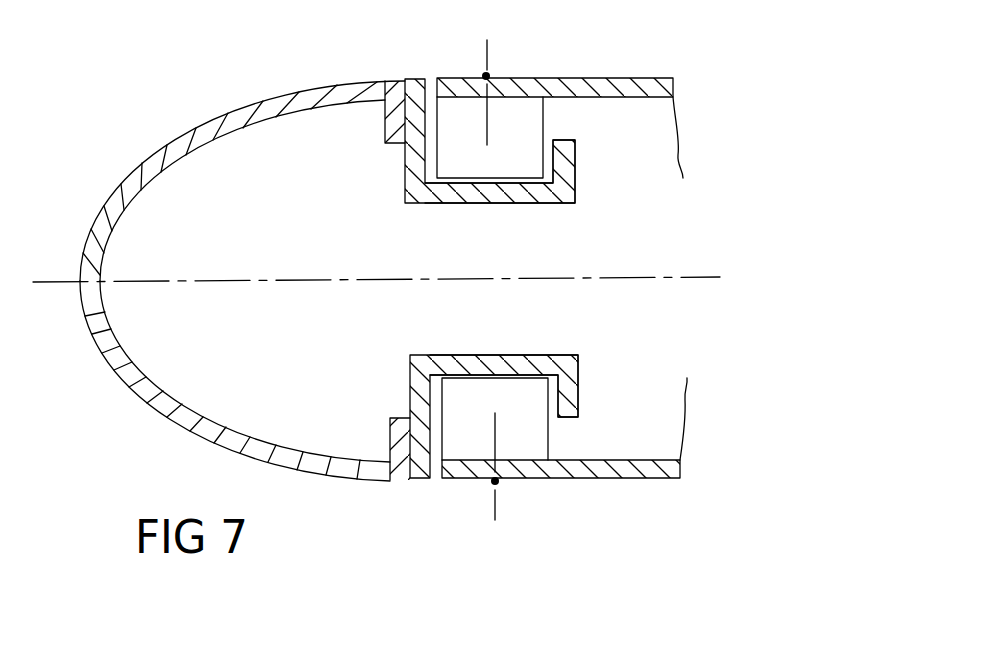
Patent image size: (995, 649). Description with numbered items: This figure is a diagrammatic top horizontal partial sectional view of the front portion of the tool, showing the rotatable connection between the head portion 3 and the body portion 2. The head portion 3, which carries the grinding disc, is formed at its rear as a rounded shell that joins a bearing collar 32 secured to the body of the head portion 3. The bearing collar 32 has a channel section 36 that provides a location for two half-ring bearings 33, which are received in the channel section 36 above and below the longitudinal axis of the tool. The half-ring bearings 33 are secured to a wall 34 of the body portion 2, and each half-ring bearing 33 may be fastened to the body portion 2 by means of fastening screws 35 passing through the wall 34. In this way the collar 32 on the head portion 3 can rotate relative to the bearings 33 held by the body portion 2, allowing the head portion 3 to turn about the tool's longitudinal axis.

The body portion 2 is at (628, 76).
The head portion 3 is at (139, 163).
The bearing collar 32 is at (398, 193).
The half-ring bearings 33 is at (460, 162).
The wall 34 is at (553, 78).
The fastening screws 35 is at (481, 77).
The channel section 36 is at (502, 200).